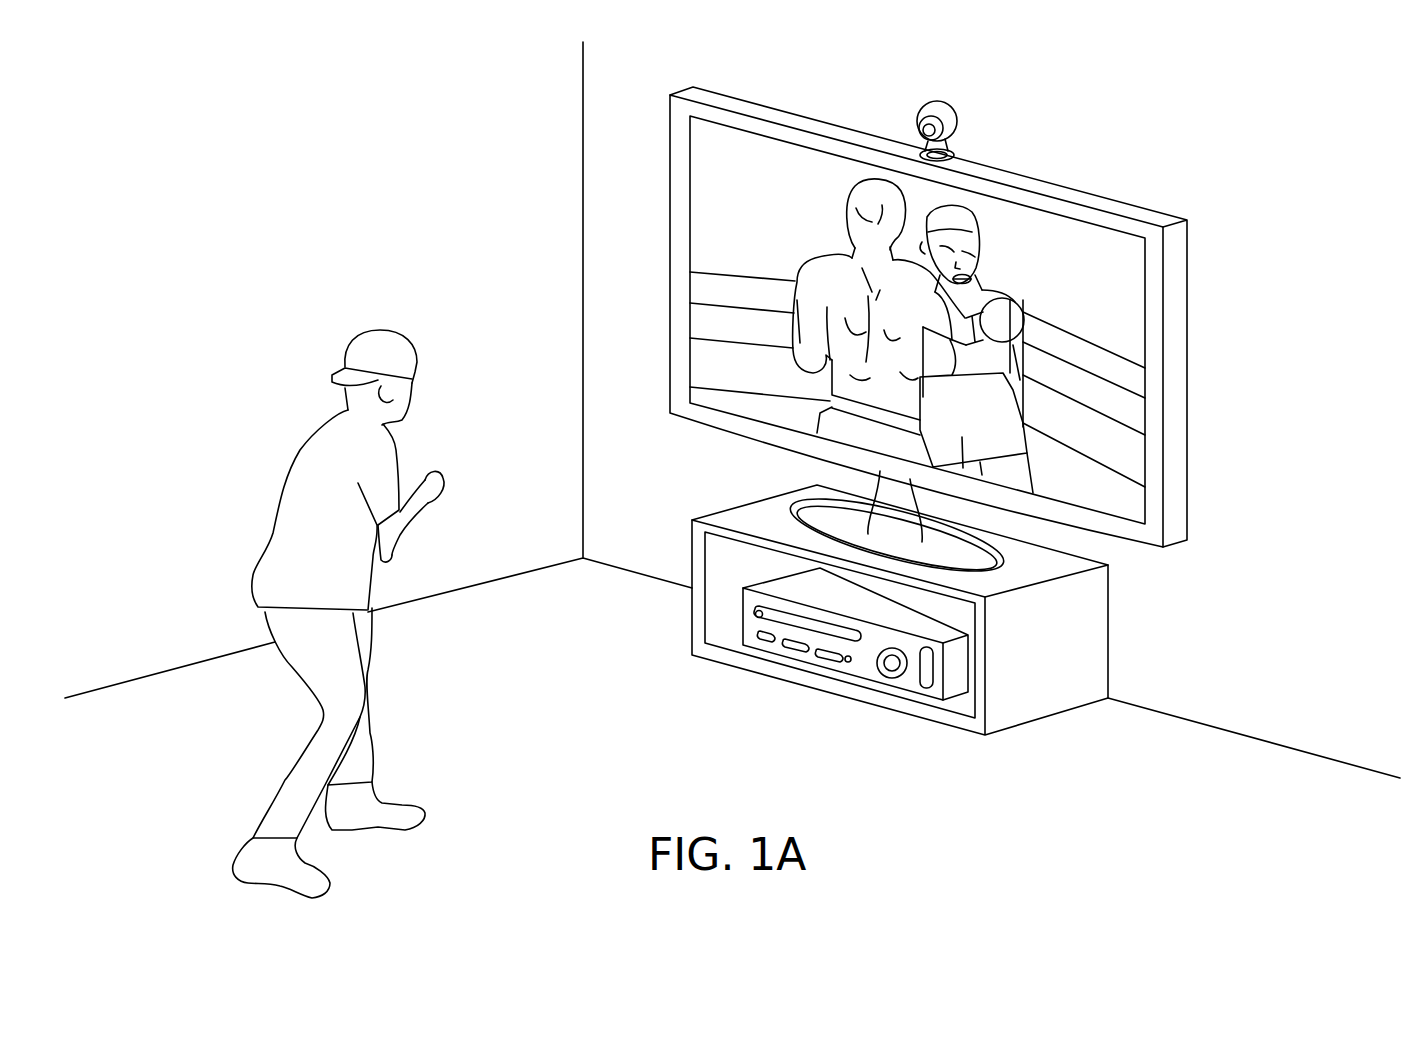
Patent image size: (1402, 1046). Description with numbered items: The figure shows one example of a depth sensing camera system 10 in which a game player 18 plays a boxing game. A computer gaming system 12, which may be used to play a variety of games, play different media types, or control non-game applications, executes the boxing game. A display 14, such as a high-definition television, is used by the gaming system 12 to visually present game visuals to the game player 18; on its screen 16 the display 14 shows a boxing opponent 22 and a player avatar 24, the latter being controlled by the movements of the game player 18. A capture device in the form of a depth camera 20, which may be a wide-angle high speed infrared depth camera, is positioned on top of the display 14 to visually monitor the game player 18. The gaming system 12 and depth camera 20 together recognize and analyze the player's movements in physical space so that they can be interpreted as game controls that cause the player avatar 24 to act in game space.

The depth sensing camera system 10 is at (1037, 71).
The computer gaming system 12 is at (863, 674).
The display 14 is at (1148, 458).
The display screen 16 is at (1190, 317).
The game player 18 is at (368, 732).
The depth camera 20 is at (957, 126).
The boxing opponent 22 is at (975, 250).
The player avatar 24 is at (794, 268).